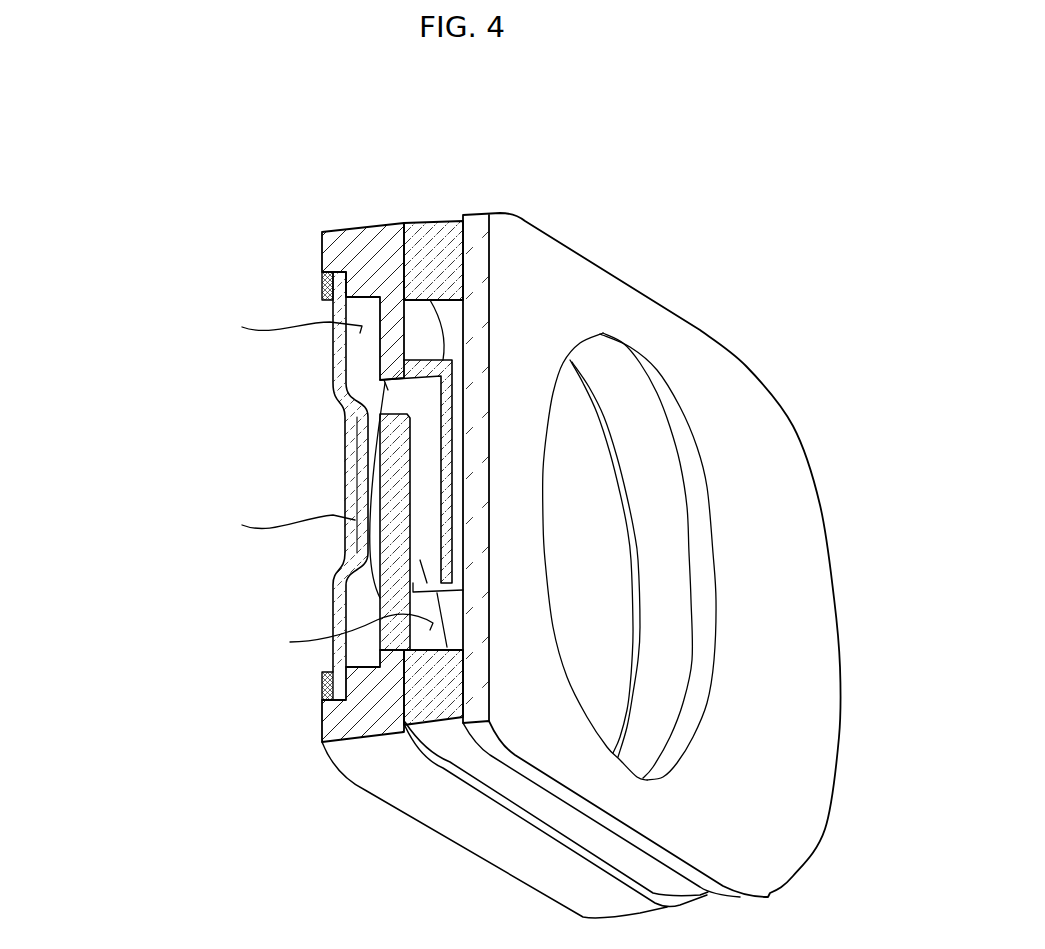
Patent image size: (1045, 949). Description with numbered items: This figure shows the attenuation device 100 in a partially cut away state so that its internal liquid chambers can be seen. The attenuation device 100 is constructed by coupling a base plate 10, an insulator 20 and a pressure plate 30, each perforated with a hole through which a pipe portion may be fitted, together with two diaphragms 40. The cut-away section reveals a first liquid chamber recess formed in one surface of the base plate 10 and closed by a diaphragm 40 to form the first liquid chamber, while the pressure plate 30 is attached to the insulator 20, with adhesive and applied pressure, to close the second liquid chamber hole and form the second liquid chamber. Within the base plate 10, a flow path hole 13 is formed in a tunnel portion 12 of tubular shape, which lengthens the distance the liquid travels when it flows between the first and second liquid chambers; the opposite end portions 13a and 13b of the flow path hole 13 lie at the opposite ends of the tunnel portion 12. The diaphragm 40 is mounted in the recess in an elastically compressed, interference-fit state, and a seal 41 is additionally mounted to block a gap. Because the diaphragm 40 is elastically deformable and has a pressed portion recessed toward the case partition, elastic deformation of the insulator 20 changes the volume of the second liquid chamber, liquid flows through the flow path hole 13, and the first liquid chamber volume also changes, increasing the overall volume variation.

The attenuation device 100 is at (766, 142).
The base plate 10 is at (360, 250).
The insulator 20 is at (441, 263).
The pressure plate 30 is at (558, 277).
The diaphragm 40 is at (343, 600).
The seal 41 is at (323, 681).
The tunnel portion 12 is at (443, 448).
The flow path hole 13 is at (430, 496).
The end portion of flow path hole 13a is at (423, 560).
The end portion of flow path hole 13b is at (395, 400).